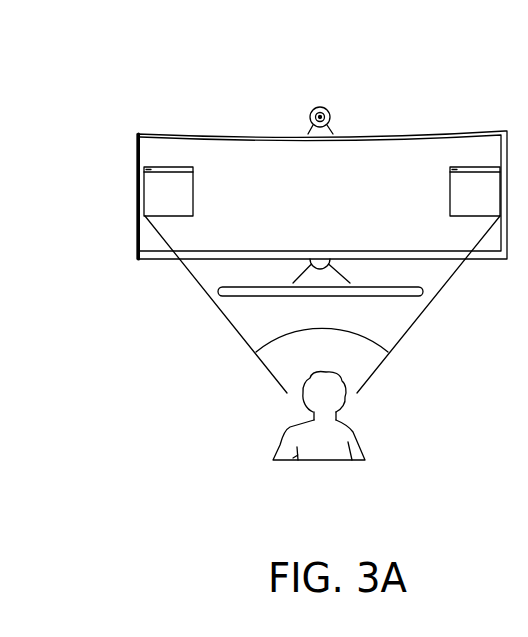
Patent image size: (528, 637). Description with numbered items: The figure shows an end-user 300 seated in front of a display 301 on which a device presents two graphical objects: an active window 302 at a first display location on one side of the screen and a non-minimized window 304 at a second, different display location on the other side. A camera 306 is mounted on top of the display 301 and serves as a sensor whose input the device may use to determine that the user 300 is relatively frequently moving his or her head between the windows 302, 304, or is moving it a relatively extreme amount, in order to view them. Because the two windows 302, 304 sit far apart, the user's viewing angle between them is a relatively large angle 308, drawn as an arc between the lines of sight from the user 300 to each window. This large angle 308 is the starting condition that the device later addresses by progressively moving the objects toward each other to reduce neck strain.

The end-user 300 is at (360, 438).
The display 301 is at (388, 143).
The active window 302 is at (152, 200).
The non-minimized window 304 is at (470, 180).
The camera 306 is at (315, 108).
The angle 308 is at (310, 333).